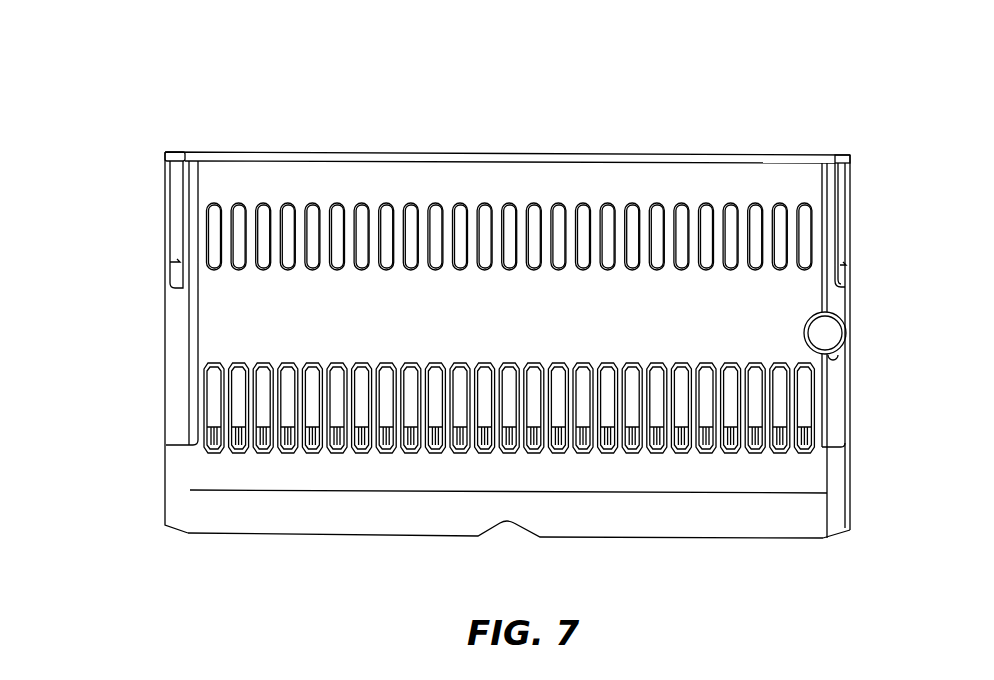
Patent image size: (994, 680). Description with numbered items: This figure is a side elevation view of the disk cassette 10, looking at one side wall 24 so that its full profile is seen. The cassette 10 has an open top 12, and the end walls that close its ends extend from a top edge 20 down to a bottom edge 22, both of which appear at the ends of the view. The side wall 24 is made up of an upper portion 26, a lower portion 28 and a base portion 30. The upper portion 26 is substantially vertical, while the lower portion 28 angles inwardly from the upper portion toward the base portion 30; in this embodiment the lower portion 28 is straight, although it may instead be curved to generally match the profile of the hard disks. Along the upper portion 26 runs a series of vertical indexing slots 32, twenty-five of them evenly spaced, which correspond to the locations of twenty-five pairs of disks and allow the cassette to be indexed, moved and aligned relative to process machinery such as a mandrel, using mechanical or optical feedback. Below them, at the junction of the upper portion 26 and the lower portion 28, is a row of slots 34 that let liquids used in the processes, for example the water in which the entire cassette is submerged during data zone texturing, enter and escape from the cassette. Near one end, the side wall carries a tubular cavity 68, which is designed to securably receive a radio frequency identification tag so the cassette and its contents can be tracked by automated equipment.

The cassette 10 is at (152, 351).
The open top 12 is at (787, 140).
The top edge 20 is at (850, 157).
The bottom edge 22 is at (847, 528).
The side wall 24 is at (802, 300).
The upper portion 26 is at (803, 193).
The lower portion 28 is at (797, 475).
The base portion 30 is at (333, 522).
The indexing slots 32 is at (265, 217).
The slots 34 is at (213, 415).
The tubular cavity 68 is at (830, 340).